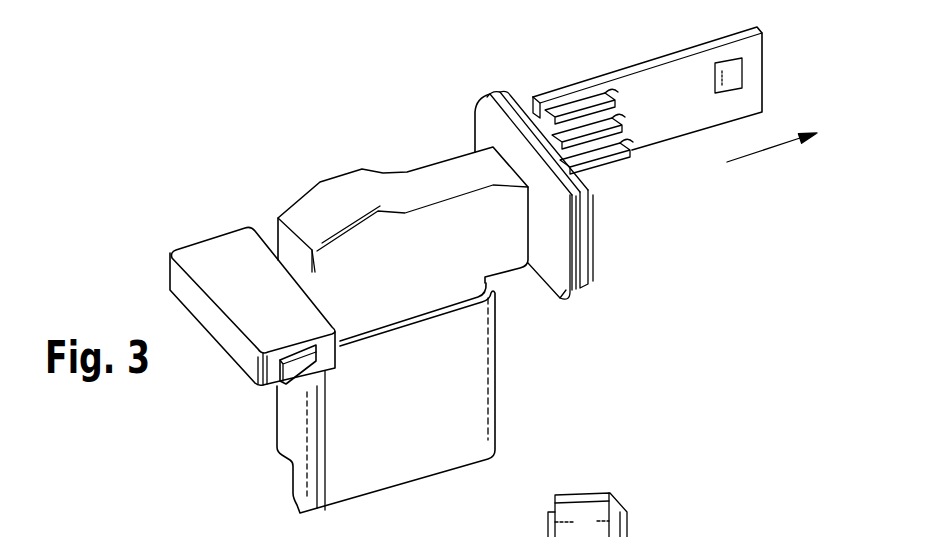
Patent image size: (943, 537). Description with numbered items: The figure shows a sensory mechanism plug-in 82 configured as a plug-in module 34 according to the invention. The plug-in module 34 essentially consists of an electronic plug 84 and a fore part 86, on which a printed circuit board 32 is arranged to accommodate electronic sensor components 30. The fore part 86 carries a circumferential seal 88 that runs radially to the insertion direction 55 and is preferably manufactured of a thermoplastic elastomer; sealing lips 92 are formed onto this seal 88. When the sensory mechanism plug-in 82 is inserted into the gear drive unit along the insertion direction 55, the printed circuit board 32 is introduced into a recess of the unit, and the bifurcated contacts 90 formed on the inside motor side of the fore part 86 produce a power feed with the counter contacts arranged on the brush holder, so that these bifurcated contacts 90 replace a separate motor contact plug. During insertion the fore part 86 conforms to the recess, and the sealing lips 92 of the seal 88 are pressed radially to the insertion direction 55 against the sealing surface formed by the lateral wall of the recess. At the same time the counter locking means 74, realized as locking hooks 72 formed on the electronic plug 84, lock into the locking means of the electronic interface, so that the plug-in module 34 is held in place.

The electronic sensor components 30 is at (730, 78).
The printed circuit board 32 is at (683, 79).
The plug-in module 34 is at (349, 222).
The sensory mechanism plug-in 82 is at (325, 165).
The insertion direction 55 is at (762, 152).
The counter locking means 74 is at (243, 416).
The locking hooks 72 is at (297, 383).
The electronic plug 84 is at (462, 397).
The fore part 86 is at (483, 130).
The circumferential seal 88 is at (488, 92).
The bifurcated contacts 90 is at (628, 150).
The sealing lips 92 is at (573, 243).